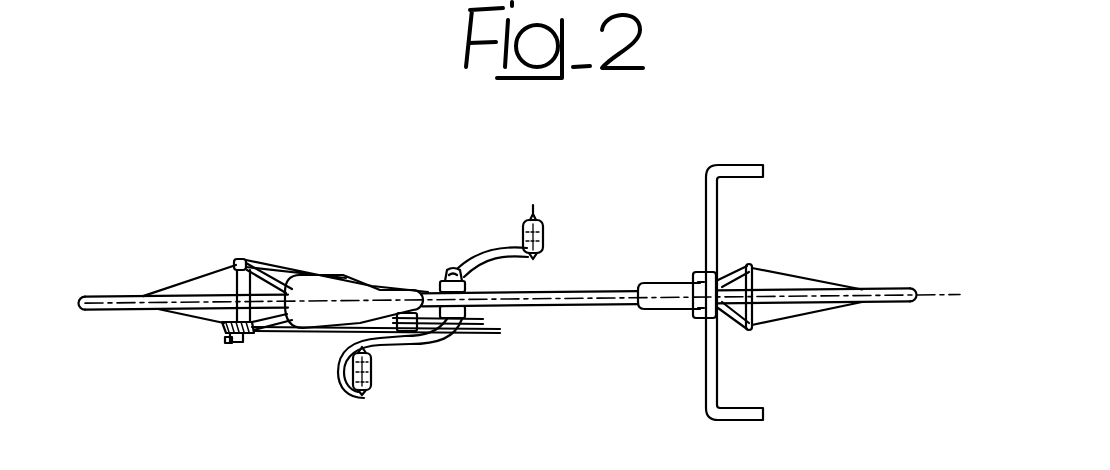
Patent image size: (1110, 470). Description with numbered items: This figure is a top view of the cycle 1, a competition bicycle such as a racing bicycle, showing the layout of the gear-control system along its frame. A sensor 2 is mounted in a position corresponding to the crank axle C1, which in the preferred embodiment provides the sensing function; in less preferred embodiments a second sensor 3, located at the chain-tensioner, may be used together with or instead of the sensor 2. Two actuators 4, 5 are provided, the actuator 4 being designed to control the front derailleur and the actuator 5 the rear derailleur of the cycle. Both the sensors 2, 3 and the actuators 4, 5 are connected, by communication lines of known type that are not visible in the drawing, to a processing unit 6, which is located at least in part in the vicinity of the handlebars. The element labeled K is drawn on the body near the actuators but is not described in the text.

The cycle 1 is at (616, 218).
The sensor 2 is at (468, 273).
The second sensor 3 is at (220, 352).
The actuator 4 is at (342, 383).
The actuator 5 is at (237, 342).
The processing unit 6 is at (697, 314).
The crank axle C1 is at (438, 266).
The housing body K is at (397, 321).